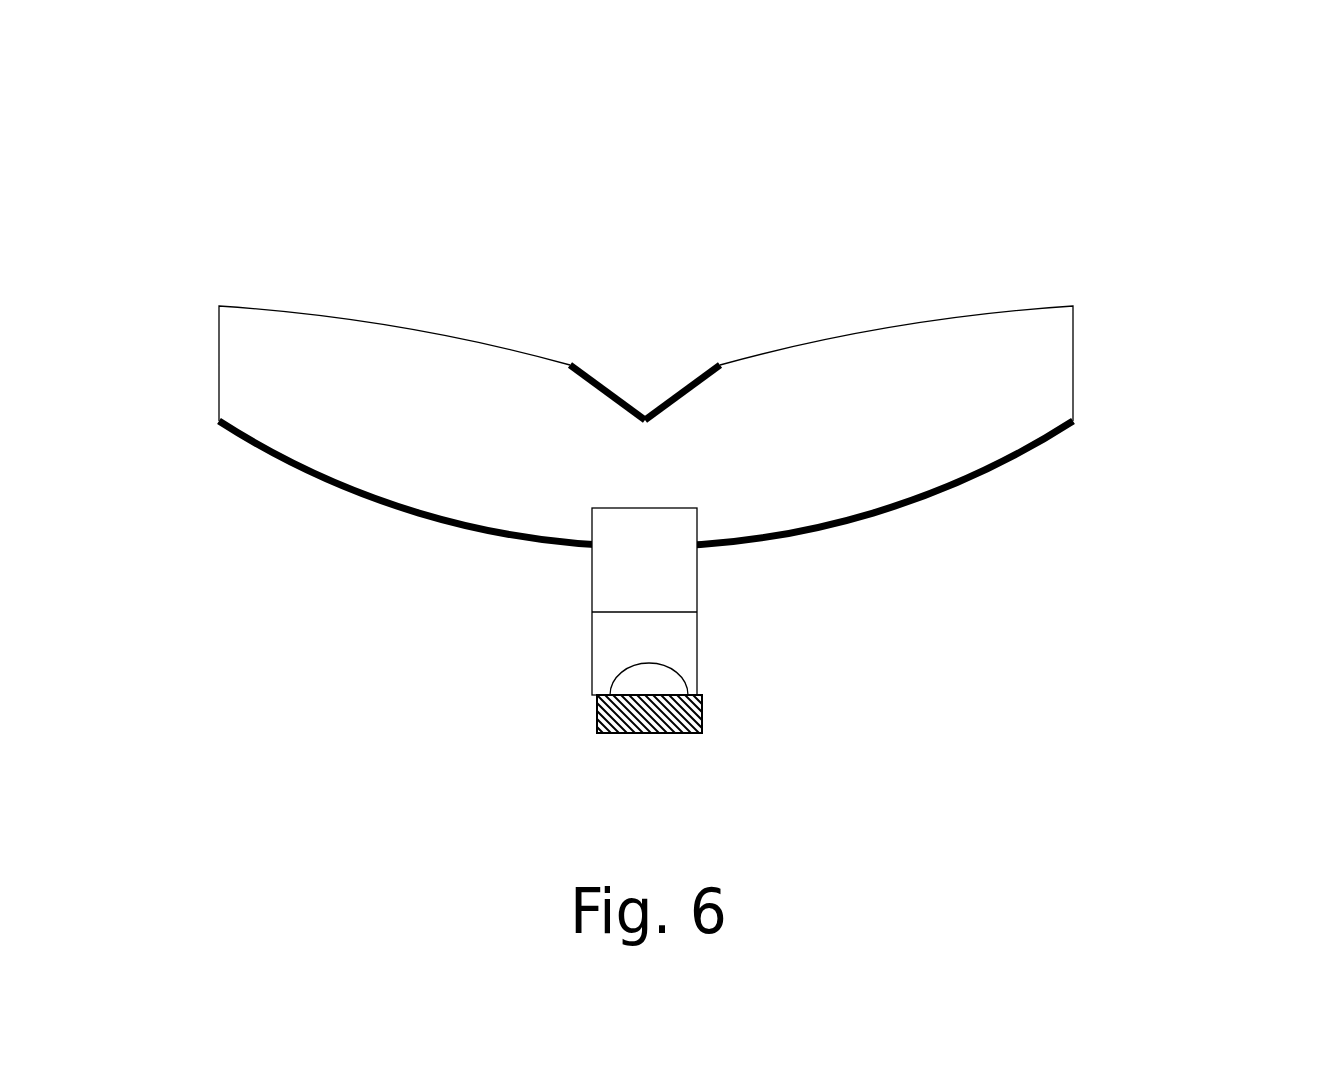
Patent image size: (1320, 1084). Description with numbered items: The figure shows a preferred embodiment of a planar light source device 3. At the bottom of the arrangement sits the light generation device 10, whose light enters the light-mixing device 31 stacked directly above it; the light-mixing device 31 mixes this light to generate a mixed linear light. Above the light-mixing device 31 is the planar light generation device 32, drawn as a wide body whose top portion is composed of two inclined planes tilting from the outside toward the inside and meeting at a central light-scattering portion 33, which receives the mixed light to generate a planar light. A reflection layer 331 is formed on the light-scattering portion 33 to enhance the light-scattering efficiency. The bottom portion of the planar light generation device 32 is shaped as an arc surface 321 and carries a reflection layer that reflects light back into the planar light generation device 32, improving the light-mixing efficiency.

The planar light source device 3 is at (1060, 142).
The planar light generation device 32 is at (1045, 390).
The light emitting surface 321 is at (322, 488).
The light-scattering portion 33 is at (761, 404).
The reflection layer 331 is at (598, 380).
The light-mixing device 31 is at (632, 583).
The light generation device 10 is at (702, 715).